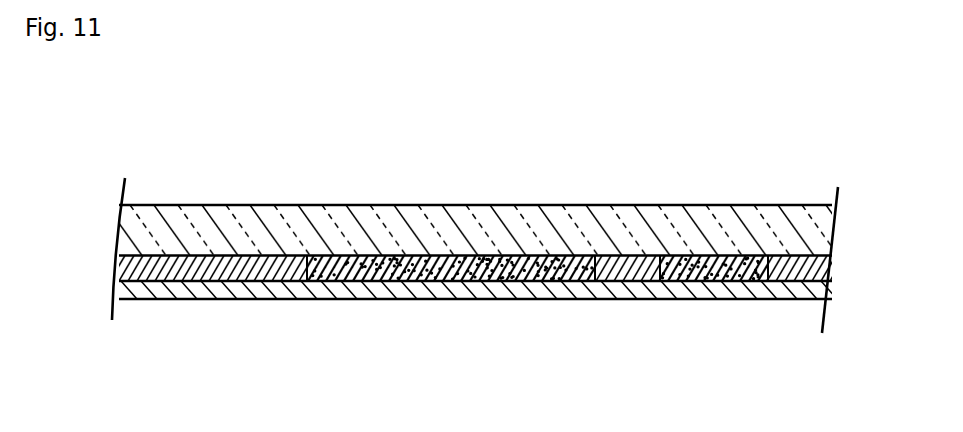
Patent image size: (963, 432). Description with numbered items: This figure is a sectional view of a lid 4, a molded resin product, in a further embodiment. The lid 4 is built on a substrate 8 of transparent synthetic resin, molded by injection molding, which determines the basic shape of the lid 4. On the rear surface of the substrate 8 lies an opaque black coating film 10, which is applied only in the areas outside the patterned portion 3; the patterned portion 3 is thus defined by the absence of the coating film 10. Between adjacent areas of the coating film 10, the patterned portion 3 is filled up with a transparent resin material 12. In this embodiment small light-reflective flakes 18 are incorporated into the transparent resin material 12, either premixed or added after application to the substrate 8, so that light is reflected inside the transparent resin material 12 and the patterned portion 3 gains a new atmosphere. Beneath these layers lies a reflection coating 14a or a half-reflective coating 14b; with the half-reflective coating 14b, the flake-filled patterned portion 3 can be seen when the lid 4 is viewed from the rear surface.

The lid 4 is at (485, 246).
The substrate 8 is at (285, 221).
The patterned portion 3 is at (475, 256).
The coating film 10 is at (201, 300).
The transparent resin material 12 is at (348, 300).
The flakes 18 is at (517, 300).
The reflection coating 14a is at (475, 352).
The half-reflective coating 14b is at (413, 300).